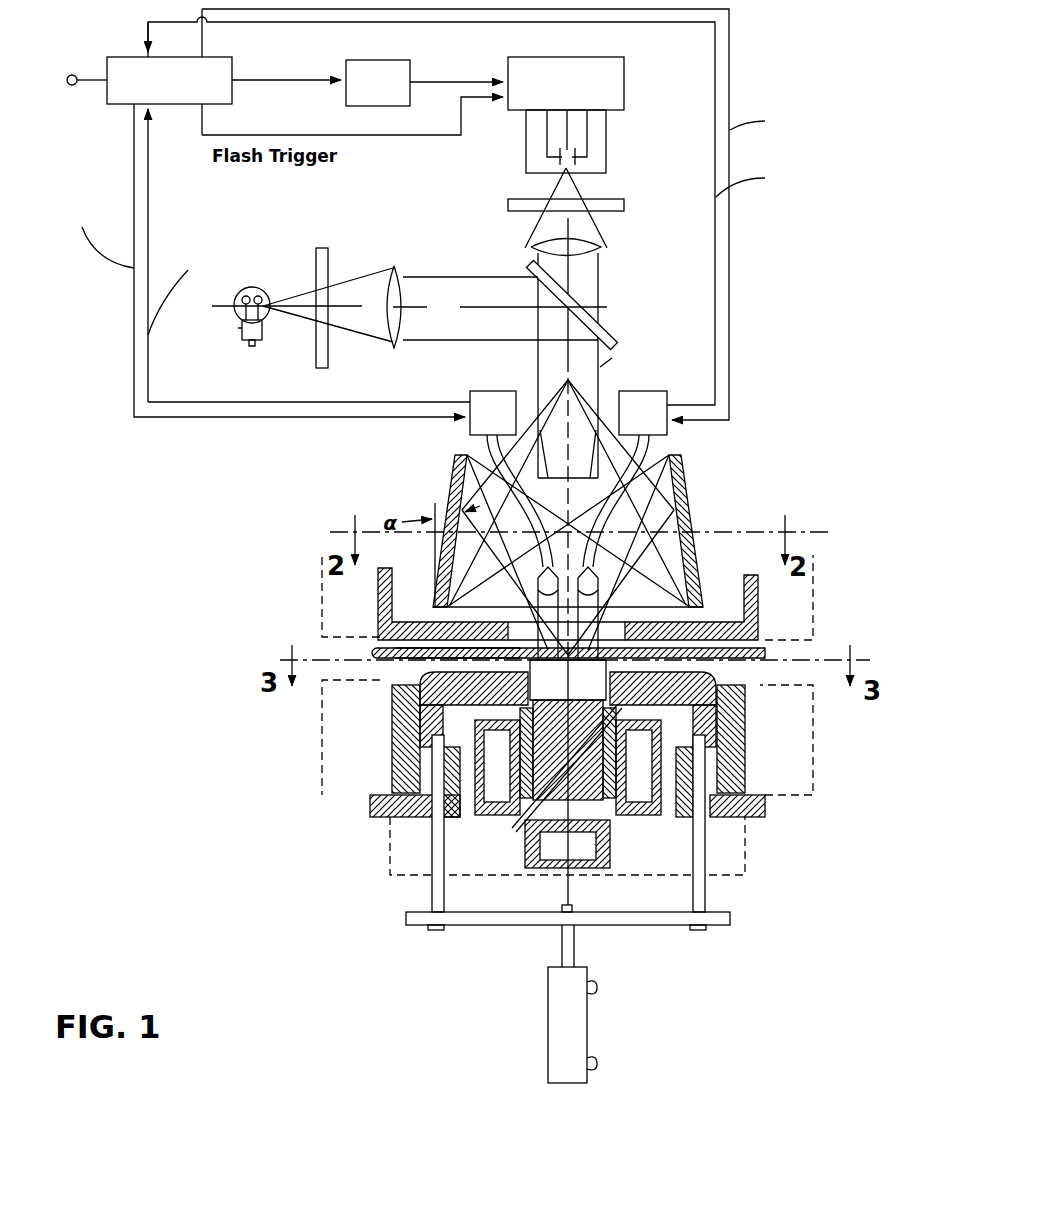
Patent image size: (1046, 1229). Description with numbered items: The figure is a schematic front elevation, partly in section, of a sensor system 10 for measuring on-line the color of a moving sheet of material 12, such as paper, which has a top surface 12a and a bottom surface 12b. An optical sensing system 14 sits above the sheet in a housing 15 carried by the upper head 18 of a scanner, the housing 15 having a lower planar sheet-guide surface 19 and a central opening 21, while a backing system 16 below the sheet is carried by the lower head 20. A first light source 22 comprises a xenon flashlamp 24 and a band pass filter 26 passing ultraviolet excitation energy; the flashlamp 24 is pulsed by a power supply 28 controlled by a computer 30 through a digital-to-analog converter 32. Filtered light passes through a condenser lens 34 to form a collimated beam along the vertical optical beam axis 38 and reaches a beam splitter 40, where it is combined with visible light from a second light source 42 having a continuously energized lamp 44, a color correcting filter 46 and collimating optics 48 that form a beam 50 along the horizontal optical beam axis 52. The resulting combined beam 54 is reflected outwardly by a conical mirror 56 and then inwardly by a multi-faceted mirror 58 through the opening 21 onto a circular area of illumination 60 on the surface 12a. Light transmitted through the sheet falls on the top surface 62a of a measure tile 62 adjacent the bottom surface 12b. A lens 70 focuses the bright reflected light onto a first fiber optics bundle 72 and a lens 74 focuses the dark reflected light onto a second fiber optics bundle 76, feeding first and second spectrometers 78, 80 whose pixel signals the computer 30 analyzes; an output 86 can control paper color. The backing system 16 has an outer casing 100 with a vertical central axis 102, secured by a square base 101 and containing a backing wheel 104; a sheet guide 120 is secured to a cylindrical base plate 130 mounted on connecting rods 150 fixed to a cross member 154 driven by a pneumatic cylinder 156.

The sensor system 10 is at (745, 86).
The sheet of material 12 is at (372, 653).
The top surface 12a is at (380, 648).
The bottom surface 12b is at (392, 660).
The optical sensing system 14 is at (335, 446).
The housing 15 is at (758, 614).
The backing system 16 is at (358, 802).
The upper head 18 is at (834, 598).
The lower planar sheet-guide surface 19 is at (773, 641).
The lower head 20 is at (820, 746).
The central opening 21 is at (702, 623).
The first light source 22 is at (640, 90).
The xenon flashlamp 24 is at (607, 122).
The band pass filter 26 is at (624, 203).
The power supply 28 is at (624, 74).
The computer 30 is at (116, 57).
The digital-to-analog converter 32 is at (386, 60).
The condenser lens 34 is at (588, 240).
The vertical optical beam axis 38 is at (575, 268).
The beam splitter 40 is at (598, 316).
The second light source 42 is at (300, 280).
The tungsten filament quartz-halide lamp 44 is at (262, 334).
The color correcting filter 46 is at (321, 248).
The collimating optics 48 is at (410, 320).
The beam 50 is at (424, 277).
The horizontal optical beam axis 52 is at (510, 307).
The combined beam 54 is at (612, 358).
The conical mirror 56 is at (585, 398).
The multi-faceted mirror 58 is at (683, 493).
The area of illumination 60 is at (587, 617).
The measure tile 62 is at (568, 730).
The top surface 62a is at (535, 627).
The lens 70 is at (540, 580).
The first fiber optics bundle 72 is at (548, 512).
The lens 74 is at (600, 582).
The second fiber optics bundle 76 is at (592, 512).
The first spectrometer 78 is at (497, 391).
The second spectrometer 80 is at (642, 391).
The output 86 is at (73, 86).
The outer casing 100 is at (745, 766).
The square base 101 is at (765, 812).
The vertical central axis 102 is at (622, 822).
The backing wheel 104 is at (626, 845).
The sheet guide 120 is at (738, 683).
The cylindrical base plate 130 is at (746, 734).
The connecting rods 150 is at (432, 890).
The cross member 154 is at (605, 910).
The pneumatic cylinder 156 is at (548, 1042).